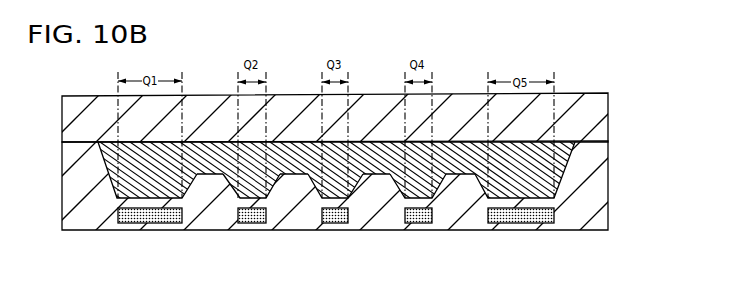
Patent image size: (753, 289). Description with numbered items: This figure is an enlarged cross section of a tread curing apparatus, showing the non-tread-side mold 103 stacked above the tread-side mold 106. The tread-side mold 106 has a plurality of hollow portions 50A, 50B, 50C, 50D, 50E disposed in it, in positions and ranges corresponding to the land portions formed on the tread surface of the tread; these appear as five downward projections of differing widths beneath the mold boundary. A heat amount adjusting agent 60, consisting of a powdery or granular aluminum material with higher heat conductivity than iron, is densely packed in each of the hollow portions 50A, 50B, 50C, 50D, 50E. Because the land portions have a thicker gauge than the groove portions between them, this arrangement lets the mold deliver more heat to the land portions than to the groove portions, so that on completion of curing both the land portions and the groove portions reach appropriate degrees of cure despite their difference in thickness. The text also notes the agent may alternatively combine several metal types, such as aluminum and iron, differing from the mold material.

The non-tread-side mold 103 is at (592, 116).
The tread-side mold 106 is at (595, 192).
The hollow portion 50A is at (137, 223).
The hollow portion 50B is at (243, 223).
The hollow portion 50C is at (325, 223).
The hollow portion 50D is at (408, 223).
The hollow portion 50E is at (500, 223).
The heat amount adjusting agent 60 is at (160, 223).